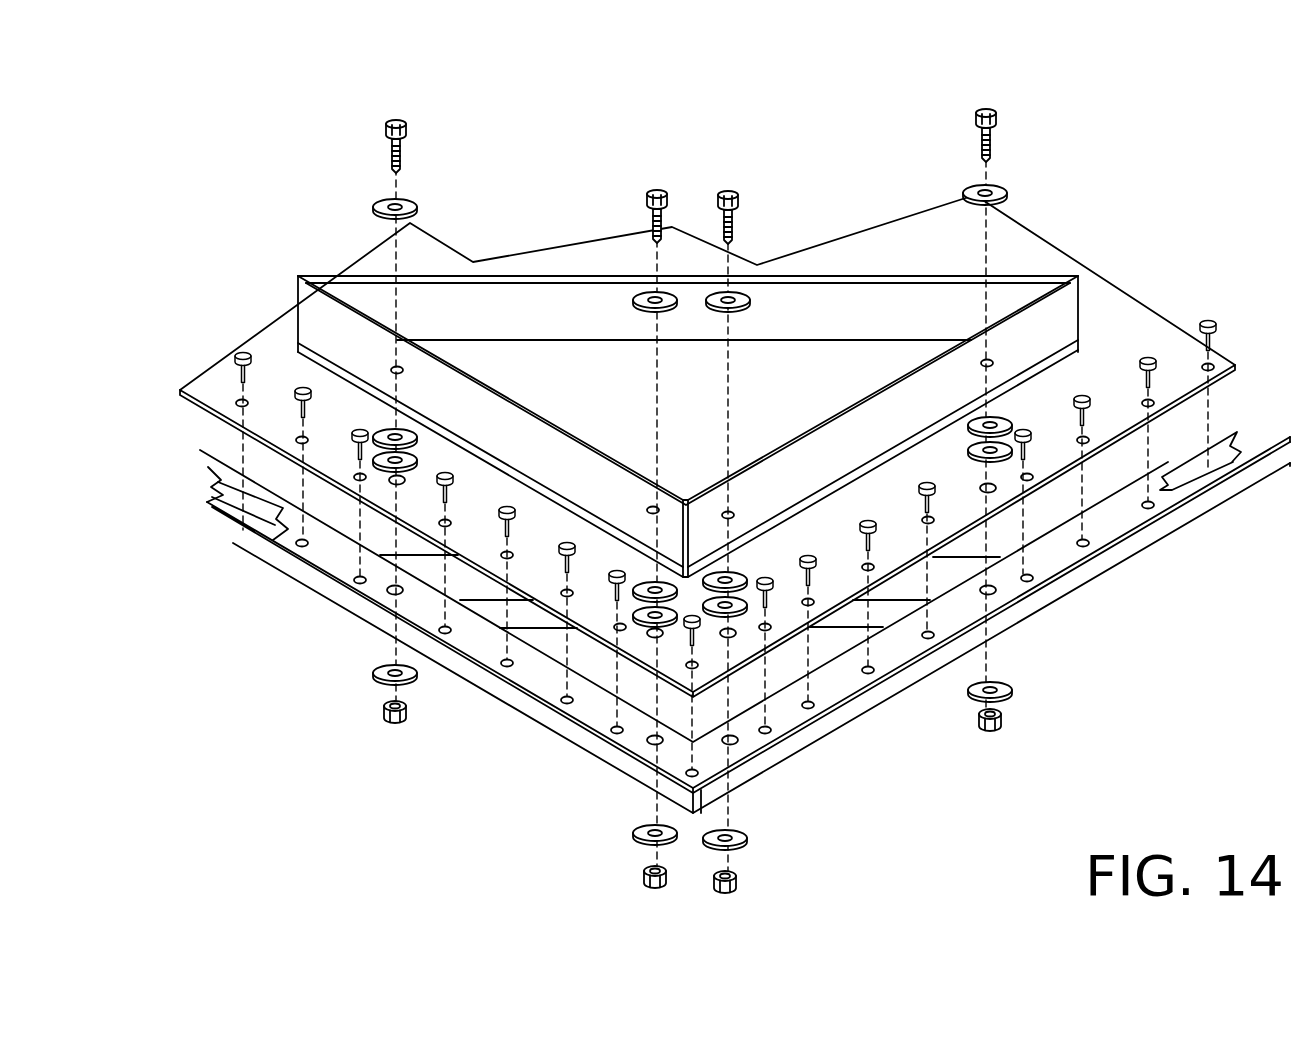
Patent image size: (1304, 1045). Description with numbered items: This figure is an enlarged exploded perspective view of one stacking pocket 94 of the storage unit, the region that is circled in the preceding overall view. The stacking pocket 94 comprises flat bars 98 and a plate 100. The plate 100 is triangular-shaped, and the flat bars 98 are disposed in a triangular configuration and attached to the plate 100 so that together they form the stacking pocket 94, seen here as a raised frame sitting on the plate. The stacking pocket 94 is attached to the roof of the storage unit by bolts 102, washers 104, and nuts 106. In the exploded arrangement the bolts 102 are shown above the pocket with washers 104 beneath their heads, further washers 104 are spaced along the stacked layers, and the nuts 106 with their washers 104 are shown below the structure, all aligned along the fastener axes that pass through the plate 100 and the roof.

The stacking pocket 94 is at (528, 205).
The flat bars 98 is at (800, 462).
The plate 100 is at (842, 363).
The bolts 102 is at (987, 112).
The washers 104 is at (380, 203).
The nuts 106 is at (735, 890).